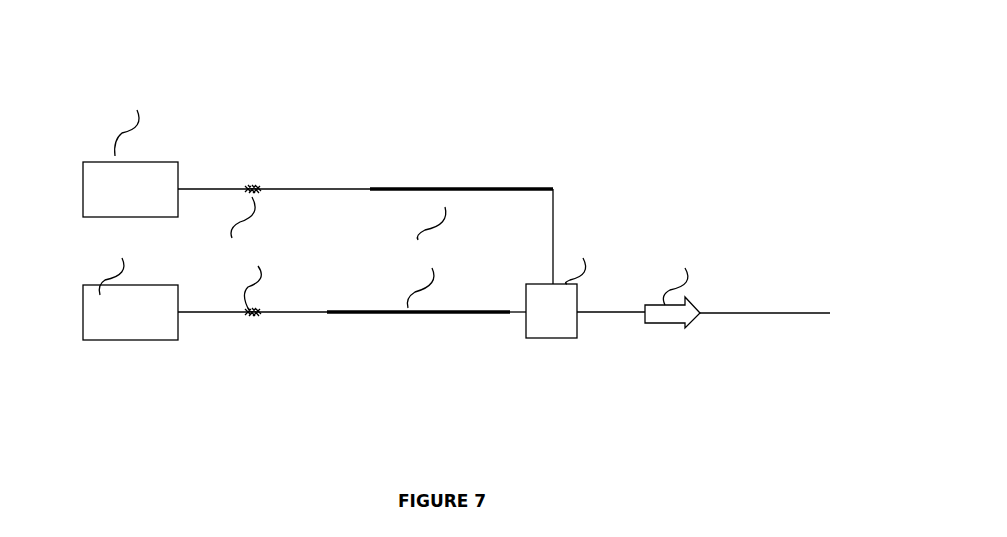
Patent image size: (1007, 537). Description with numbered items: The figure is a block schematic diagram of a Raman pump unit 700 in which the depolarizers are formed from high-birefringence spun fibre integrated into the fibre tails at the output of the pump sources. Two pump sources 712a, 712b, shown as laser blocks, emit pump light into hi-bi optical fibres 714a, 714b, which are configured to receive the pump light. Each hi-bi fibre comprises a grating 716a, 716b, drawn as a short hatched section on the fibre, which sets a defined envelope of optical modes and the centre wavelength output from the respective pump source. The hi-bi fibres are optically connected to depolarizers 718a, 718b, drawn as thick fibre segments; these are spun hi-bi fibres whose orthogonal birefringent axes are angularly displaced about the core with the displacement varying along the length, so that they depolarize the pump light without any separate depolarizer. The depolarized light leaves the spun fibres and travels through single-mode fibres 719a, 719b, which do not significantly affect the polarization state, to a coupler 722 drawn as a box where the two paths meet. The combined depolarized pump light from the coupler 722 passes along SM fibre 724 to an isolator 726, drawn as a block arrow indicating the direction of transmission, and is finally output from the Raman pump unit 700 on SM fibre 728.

The Raman pump unit 700 is at (655, 70).
The pump source 712a is at (96, 162).
The pump source 712b is at (88, 340).
The hi-bi optical fibre 714a is at (202, 188).
The hi-bi optical fibre 714b is at (218, 313).
The grating 716a is at (255, 188).
The grating 716b is at (258, 313).
The depolarizer 718a is at (447, 205).
The depolarizer 718b is at (445, 313).
The SM fibre 719a is at (556, 218).
The SM fibre 719b is at (518, 313).
The coupler 722 is at (578, 296).
The SM fibre 724 is at (617, 316).
The isolator 726 is at (697, 302).
The SM fibre 728 is at (793, 315).